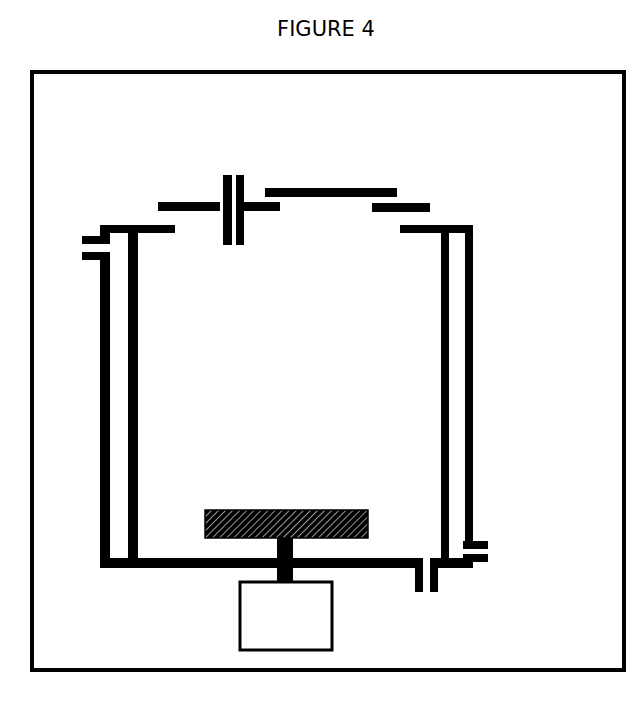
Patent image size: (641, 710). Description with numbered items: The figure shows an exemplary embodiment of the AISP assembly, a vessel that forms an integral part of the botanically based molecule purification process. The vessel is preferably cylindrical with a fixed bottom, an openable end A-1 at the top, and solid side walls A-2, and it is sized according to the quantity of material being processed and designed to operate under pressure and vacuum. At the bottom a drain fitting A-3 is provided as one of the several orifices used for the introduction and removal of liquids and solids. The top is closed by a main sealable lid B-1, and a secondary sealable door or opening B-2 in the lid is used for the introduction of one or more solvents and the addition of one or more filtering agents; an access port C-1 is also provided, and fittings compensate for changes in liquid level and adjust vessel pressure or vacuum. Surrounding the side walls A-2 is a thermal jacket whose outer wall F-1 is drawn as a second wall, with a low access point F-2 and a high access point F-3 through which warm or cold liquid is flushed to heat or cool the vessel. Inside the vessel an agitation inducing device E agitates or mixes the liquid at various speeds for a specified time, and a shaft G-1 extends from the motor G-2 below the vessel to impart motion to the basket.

The openable end A-1 is at (143, 228).
The side walls A-2 is at (142, 336).
The drain fitting A-3 is at (437, 578).
The main sealable lid B-1 is at (189, 200).
The secondary sealable door or opening B-2 is at (292, 187).
The access port C-1 is at (246, 227).
The agitation inducing device E is at (242, 523).
The outer wall of thermal jacket F-1 is at (476, 288).
The low access point F-2 is at (490, 543).
The high access point F-3 is at (92, 238).
The shaft G-1 is at (273, 549).
The motor G-2 is at (305, 622).